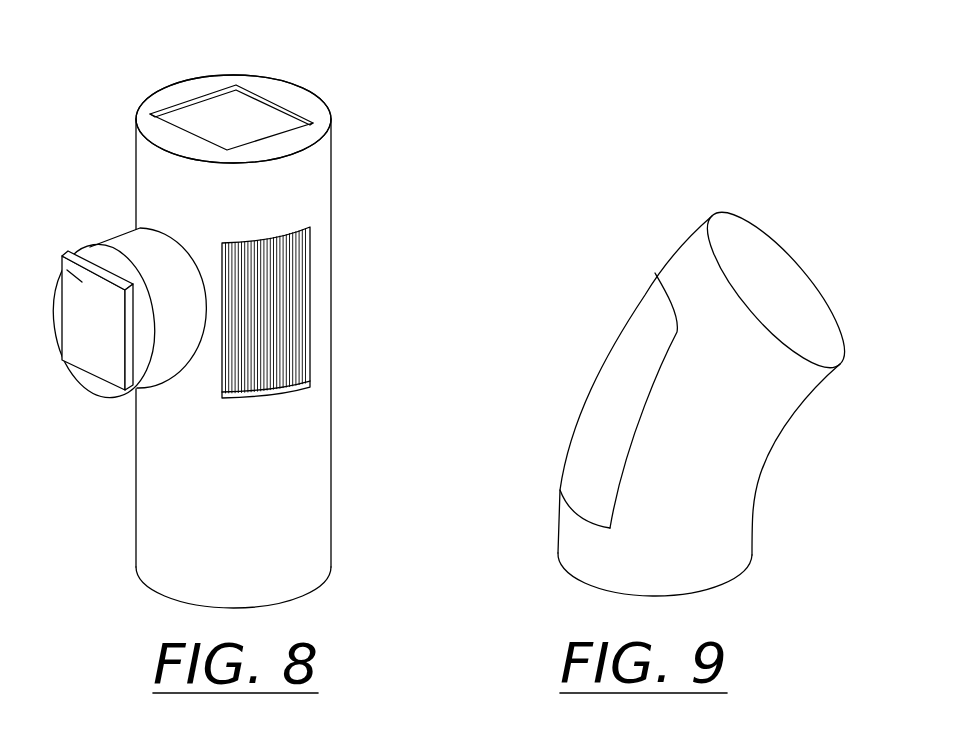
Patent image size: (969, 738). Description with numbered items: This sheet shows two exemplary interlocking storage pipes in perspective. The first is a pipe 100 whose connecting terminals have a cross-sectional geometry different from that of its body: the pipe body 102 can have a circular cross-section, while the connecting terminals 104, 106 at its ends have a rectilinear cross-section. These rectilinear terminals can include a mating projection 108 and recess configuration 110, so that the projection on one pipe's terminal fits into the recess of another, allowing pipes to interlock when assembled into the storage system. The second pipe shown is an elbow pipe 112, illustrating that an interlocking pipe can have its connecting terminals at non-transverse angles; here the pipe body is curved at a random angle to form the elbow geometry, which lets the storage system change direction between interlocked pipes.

In FIG. 8, the pipe 100 is at (256, 307).
In FIG. 8, the pipe body 102 is at (317, 447).
In FIG. 8, the connecting terminal 104 is at (295, 100).
In FIG. 8, the connecting terminal 106 is at (103, 388).
In FIG. 8, the mating projection 108 is at (82, 282).
In FIG. 8, the recess configuration 110 is at (203, 117).
In FIG. 9, the elbow pipe 112 is at (592, 297).